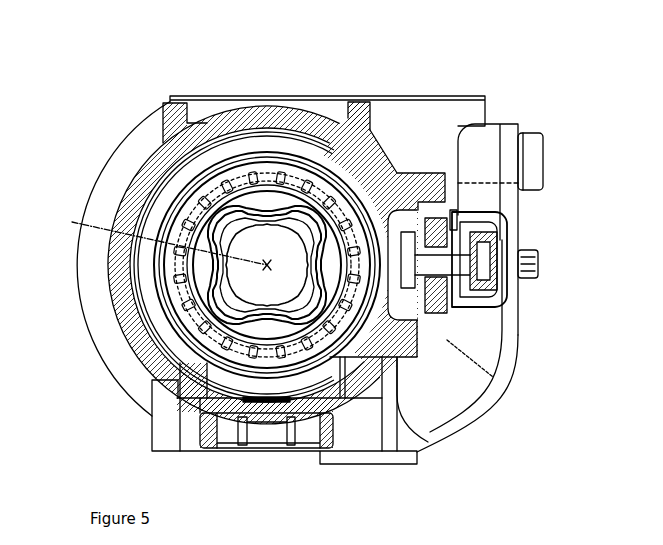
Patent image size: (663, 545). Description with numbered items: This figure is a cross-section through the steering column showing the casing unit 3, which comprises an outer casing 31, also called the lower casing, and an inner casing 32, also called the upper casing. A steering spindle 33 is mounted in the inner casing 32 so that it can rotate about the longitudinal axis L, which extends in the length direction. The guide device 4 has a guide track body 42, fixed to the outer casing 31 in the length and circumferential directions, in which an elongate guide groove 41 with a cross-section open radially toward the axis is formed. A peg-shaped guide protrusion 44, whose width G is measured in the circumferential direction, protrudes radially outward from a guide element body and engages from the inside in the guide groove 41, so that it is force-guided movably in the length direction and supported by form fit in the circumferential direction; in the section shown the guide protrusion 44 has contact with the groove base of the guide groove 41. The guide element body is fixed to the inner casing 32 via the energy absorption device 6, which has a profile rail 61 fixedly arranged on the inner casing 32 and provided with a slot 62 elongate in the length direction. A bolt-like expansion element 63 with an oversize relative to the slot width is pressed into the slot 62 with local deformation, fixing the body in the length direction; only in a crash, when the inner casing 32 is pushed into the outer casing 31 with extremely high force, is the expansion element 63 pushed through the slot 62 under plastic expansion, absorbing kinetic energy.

The casing unit 3 is at (136, 106).
The outer casing 31 is at (260, 103).
The inner casing 32 is at (292, 142).
The steering spindle 33 is at (140, 165).
The energy absorption device 6 is at (400, 270).
The longitudinal axis L is at (161, 238).
The profile rail 61 is at (400, 173).
The slot 62 is at (423, 173).
The guide device 4 is at (478, 319).
The guide groove 41 is at (507, 300).
The guide track body 42 is at (505, 278).
The guide protrusion 44 is at (510, 247).
The width G is at (540, 263).
The expansion element 63 is at (430, 347).